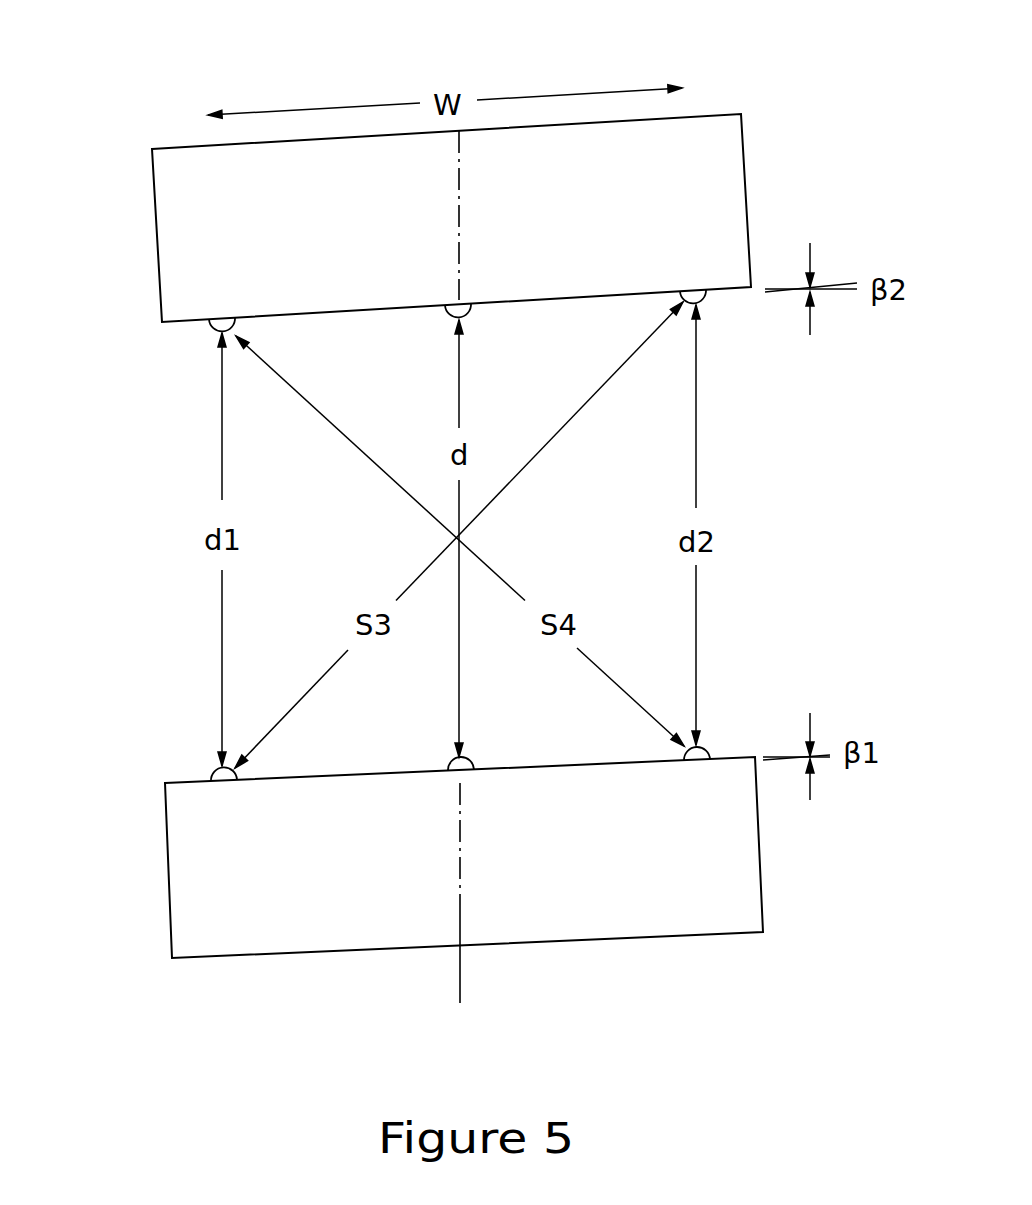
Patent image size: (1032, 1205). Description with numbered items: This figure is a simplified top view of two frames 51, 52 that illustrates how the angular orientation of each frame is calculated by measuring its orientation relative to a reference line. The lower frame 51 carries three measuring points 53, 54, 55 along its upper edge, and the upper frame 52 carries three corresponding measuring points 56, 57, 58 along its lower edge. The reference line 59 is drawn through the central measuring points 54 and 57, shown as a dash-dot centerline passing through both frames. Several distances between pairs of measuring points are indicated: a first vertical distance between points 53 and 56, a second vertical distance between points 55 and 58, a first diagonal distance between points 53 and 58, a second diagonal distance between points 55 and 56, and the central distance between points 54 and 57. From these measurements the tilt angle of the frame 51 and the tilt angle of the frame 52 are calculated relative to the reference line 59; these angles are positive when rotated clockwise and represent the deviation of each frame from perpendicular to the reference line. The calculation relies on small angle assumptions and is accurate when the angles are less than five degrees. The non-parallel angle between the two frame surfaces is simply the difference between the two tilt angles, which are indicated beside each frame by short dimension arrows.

The frame 51 is at (307, 958).
The frame 52 is at (157, 268).
The measuring point 53 is at (210, 762).
The measuring point 54 is at (447, 762).
The measuring point 55 is at (675, 752).
The measuring point 56 is at (212, 342).
The measuring point 57 is at (445, 327).
The measuring point 58 is at (708, 308).
The reference line 59 is at (465, 922).